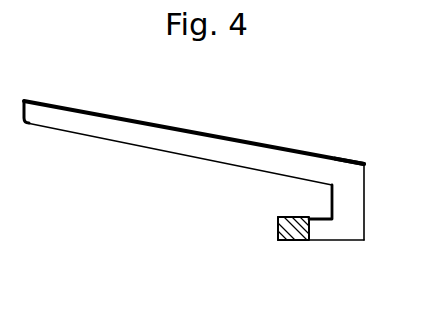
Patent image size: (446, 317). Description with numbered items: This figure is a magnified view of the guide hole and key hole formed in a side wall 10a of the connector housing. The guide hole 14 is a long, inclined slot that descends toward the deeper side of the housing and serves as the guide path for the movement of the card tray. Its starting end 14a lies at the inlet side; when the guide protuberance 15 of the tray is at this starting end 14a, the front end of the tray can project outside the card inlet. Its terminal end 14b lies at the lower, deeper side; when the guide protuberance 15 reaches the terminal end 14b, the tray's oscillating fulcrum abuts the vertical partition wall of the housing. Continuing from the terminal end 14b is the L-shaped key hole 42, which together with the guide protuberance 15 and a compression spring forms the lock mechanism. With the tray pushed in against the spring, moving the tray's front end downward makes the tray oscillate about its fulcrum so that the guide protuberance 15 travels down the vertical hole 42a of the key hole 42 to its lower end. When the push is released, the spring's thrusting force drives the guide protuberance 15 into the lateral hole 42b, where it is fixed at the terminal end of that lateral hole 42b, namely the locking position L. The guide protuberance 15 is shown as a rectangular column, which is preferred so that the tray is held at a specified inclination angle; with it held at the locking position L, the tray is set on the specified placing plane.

The side wall 10a is at (78, 206).
The guide hole 14 is at (248, 155).
The starting end 14a is at (34, 110).
The terminal end 14b is at (353, 168).
The guide protuberance 15 is at (292, 240).
The key hole 42 is at (364, 230).
The vertical hole 42a is at (362, 197).
The lateral hole 42b is at (320, 233).
The locking position L is at (283, 241).